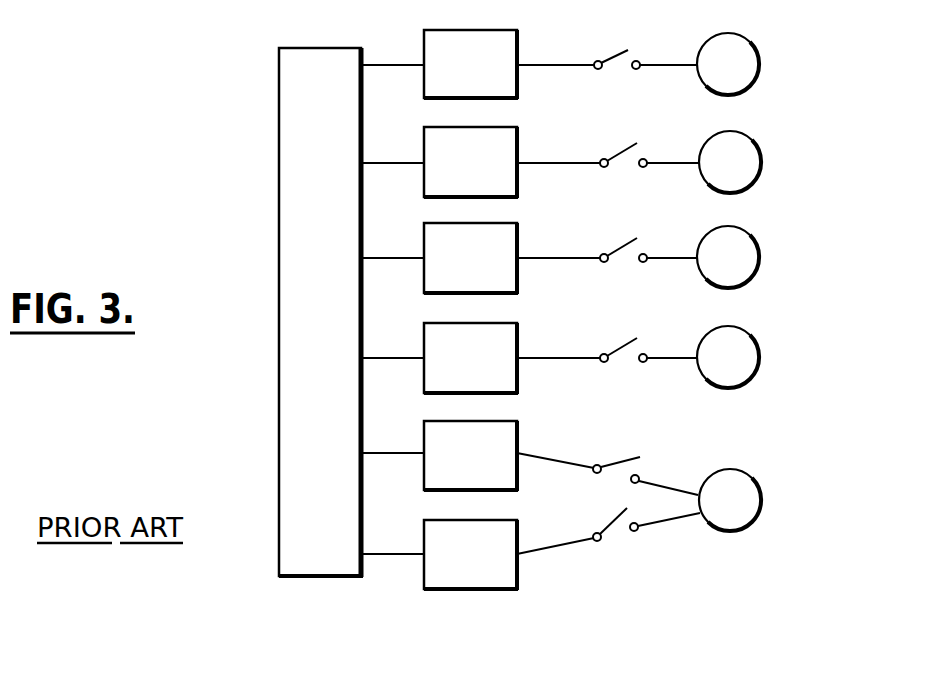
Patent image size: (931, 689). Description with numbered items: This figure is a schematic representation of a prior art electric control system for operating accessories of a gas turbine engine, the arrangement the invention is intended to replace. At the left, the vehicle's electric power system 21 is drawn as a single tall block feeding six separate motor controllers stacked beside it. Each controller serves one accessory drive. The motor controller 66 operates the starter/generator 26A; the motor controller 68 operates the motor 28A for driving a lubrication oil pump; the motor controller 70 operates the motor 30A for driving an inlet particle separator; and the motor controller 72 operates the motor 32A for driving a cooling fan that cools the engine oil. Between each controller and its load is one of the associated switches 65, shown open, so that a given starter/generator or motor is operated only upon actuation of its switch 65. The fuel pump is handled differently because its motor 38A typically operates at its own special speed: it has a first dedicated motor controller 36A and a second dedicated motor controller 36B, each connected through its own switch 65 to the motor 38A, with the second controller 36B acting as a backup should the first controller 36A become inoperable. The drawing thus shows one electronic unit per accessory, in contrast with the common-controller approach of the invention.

The electric power system 21 is at (302, 303).
The motor controller 66 is at (455, 77).
The motor controller 68 is at (455, 180).
The motor controller 70 is at (455, 275).
The motor controller 72 is at (455, 375).
The first dedicated motor controller 36A is at (448, 471).
The second dedicated motor controller 36B is at (448, 561).
The switches 65 is at (624, 54).
The starter/generator 26A is at (758, 52).
The motor 28A is at (759, 148).
The motor 30A is at (758, 250).
The motor 32A is at (757, 336).
The motor 38A is at (757, 480).